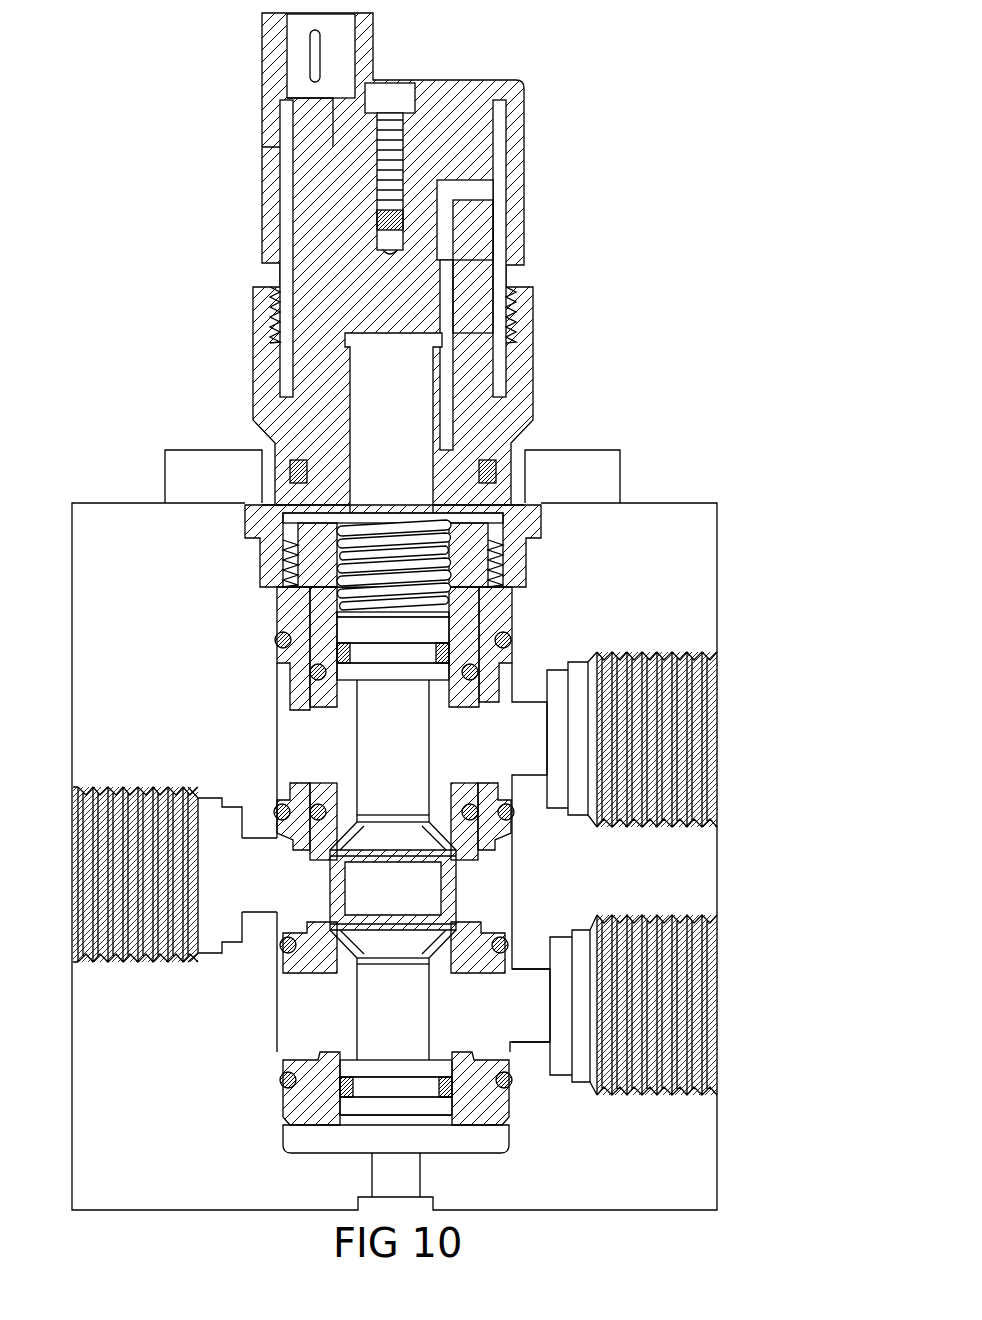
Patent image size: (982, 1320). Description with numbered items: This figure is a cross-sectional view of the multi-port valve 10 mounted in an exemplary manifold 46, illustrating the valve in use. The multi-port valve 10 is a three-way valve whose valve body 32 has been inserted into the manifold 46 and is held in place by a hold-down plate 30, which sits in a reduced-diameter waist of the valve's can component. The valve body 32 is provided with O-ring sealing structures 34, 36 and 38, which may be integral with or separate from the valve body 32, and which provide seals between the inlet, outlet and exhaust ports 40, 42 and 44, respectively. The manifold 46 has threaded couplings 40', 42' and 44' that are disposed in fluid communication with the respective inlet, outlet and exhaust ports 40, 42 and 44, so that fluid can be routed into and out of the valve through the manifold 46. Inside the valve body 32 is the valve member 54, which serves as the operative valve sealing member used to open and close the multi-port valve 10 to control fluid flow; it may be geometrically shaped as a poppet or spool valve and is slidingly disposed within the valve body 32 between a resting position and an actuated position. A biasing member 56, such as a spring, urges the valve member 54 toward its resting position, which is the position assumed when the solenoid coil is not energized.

The multi-port valve 10 is at (605, 307).
The hold-down plate 30 is at (598, 476).
The manifold 46 is at (96, 557).
The O-ring sealing structure 34 is at (560, 625).
The biasing member 56 is at (448, 578).
The valve body 32 is at (228, 712).
The exhaust port 44 is at (428, 747).
The threaded coupling 44' is at (660, 739).
The threaded coupling 42' is at (130, 874).
The O-ring sealing structure 36 is at (552, 830).
The valve member 54 is at (430, 885).
The outlet port 42 is at (251, 921).
The inlet port 40 is at (453, 1012).
The threaded coupling 40' is at (661, 1005).
The O-ring sealing structure 38 is at (550, 1115).